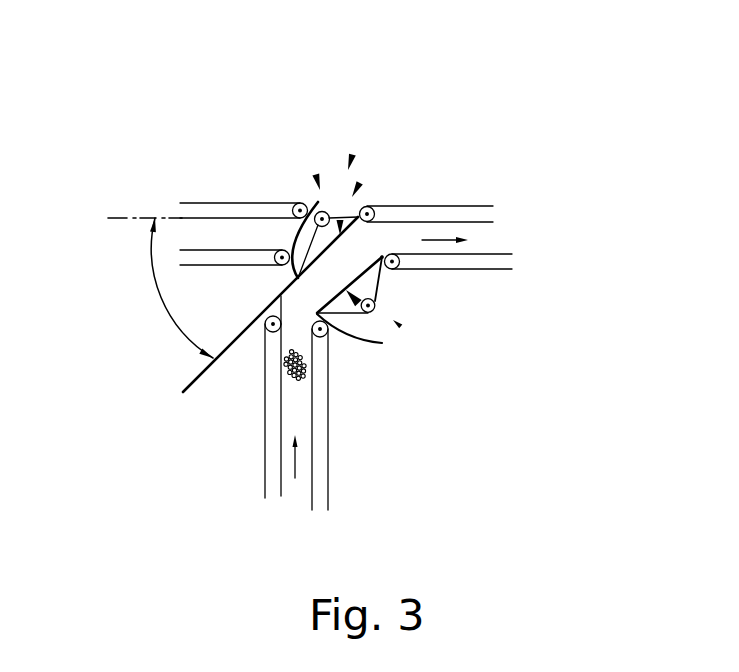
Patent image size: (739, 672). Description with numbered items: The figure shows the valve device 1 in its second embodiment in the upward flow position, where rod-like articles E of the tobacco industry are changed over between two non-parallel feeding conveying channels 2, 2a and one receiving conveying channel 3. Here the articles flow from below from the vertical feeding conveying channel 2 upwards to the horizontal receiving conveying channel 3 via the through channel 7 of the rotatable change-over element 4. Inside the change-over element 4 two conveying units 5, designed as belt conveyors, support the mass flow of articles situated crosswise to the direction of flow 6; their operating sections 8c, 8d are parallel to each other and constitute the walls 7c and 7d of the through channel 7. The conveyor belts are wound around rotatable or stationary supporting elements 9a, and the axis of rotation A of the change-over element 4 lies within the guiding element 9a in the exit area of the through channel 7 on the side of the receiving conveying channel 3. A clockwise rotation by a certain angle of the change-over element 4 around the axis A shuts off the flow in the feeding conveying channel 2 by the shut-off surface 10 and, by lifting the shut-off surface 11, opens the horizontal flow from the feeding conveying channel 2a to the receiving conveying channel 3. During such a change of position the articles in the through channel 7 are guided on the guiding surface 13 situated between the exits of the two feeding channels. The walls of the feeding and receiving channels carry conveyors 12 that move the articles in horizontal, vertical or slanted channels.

The valve device 1 is at (352, 157).
The vertical feeding conveying channel 2 is at (287, 492).
The feeding conveying channel 2a is at (203, 230).
The receiving conveying channel 3 is at (471, 236).
The rotatable change-over element 4 is at (316, 176).
The conveying units 5 is at (360, 183).
The direction of flow 6 is at (295, 465).
The through channel 7 is at (306, 207).
The wall of the through channel 7c is at (337, 207).
The wall of the through channel 7d is at (371, 311).
The operating section 8c is at (297, 209).
The operating section 8d is at (363, 270).
The guiding element 9a is at (394, 255).
The shut-off surface 10 is at (355, 336).
The shut-off surface 11 is at (300, 229).
The conveyors 12 is at (488, 222).
The guiding surface 13 is at (297, 278).
The axis of rotation A is at (382, 257).
The rod-like articles E is at (290, 372).